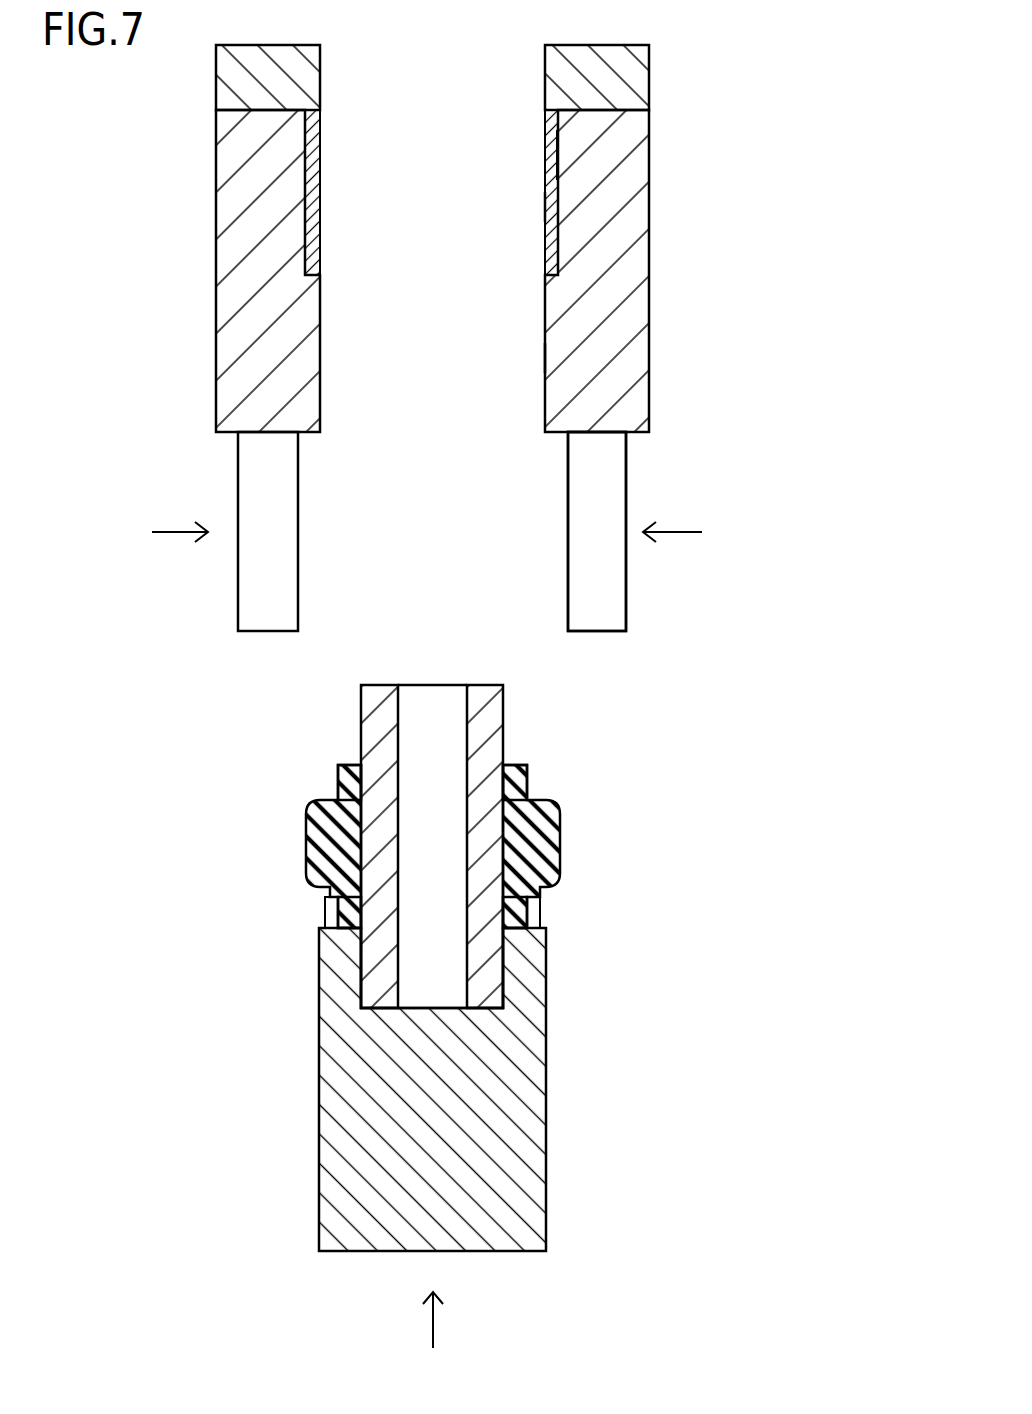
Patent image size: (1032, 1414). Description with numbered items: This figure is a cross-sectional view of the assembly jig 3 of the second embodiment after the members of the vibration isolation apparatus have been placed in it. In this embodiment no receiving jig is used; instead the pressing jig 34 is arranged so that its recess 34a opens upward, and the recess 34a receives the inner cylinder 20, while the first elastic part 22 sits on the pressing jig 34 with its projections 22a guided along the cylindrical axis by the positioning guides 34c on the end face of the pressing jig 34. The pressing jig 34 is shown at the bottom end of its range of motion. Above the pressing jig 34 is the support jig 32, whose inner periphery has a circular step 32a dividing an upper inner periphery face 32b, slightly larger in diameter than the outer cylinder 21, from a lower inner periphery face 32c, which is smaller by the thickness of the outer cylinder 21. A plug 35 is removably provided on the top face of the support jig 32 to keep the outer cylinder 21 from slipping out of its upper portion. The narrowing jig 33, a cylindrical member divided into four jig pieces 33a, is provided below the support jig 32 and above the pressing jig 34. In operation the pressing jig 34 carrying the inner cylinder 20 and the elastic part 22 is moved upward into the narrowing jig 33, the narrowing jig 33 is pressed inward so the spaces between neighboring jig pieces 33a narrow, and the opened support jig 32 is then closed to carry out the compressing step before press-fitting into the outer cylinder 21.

The assembly jig 3 is at (525, 338).
The inner cylinder 20 is at (486, 685).
The outer cylinder 21 is at (545, 207).
The first elastic part 22 is at (306, 848).
The projection 22a is at (340, 772).
The support jig 32 is at (649, 300).
The step 32a is at (551, 265).
The upper inner periphery face 32b is at (551, 158).
The lower inner periphery face 32c is at (545, 358).
The narrowing jig 33 is at (644, 486).
The jig piece 33a is at (626, 590).
The pressing jig 34 is at (482, 1251).
The recess 34a is at (368, 958).
The positioning guide 34c is at (328, 916).
The plug 35 is at (649, 80).